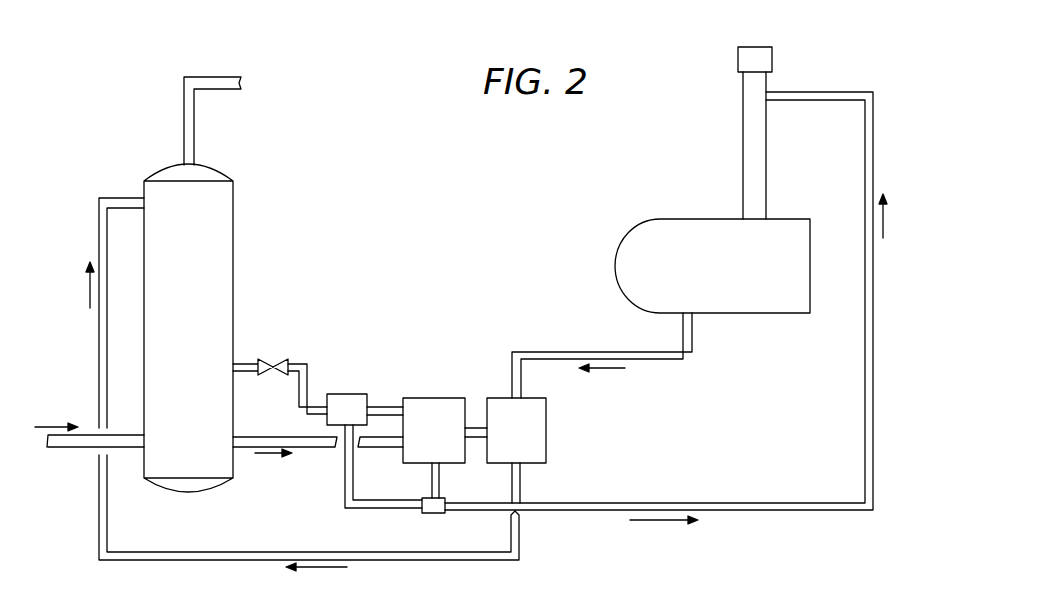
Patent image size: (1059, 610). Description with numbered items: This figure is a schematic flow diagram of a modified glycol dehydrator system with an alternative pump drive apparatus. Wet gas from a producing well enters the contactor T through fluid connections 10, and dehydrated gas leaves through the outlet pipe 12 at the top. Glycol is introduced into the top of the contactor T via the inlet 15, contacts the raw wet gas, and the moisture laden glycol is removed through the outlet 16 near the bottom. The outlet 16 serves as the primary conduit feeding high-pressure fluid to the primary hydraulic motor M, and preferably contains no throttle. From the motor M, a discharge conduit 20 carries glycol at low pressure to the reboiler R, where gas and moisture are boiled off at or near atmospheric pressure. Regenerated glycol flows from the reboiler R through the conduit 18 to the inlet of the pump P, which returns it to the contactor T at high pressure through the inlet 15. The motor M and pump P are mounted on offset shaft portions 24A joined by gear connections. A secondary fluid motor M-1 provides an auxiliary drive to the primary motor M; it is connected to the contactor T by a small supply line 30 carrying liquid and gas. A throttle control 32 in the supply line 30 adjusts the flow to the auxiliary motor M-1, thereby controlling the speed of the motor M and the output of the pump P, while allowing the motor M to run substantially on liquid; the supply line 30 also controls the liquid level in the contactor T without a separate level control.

The fluid connections 10 is at (75, 450).
The outlet pipe 12 is at (216, 75).
The inlet 15 is at (114, 196).
The outlet 16 is at (312, 452).
The conduit 18 is at (585, 351).
The discharge conduit 20 is at (634, 502).
The offset shaft portions 24A is at (390, 405).
The supply line 30 is at (310, 385).
The throttle control 32 is at (276, 358).
The contactor T is at (192, 362).
The secondary fluid motor M-1 is at (352, 393).
The hydraulic motor M is at (426, 397).
The pump P is at (546, 432).
The reboiler R is at (697, 219).